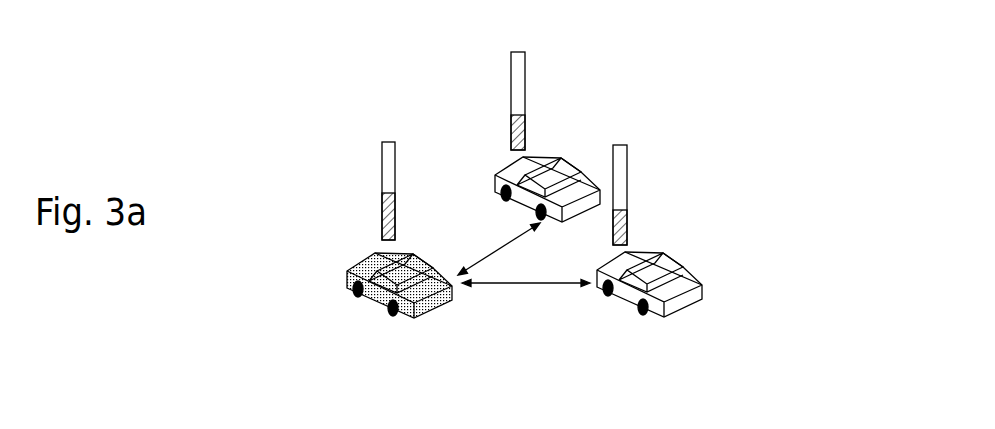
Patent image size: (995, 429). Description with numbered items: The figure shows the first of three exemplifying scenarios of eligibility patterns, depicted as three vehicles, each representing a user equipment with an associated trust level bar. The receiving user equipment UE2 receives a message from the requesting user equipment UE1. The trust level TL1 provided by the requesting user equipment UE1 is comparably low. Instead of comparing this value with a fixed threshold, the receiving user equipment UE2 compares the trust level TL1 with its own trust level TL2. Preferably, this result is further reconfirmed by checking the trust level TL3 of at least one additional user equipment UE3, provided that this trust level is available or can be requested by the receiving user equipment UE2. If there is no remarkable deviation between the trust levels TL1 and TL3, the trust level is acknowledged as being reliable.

The trust level TL1 is at (645, 194).
The trust level TL2 is at (390, 173).
The trust level TL3 is at (522, 83).
The requesting user equipment UE1 is at (687, 310).
The receiving user equipment UE2 is at (370, 295).
The additional user equipment UE3 is at (548, 175).